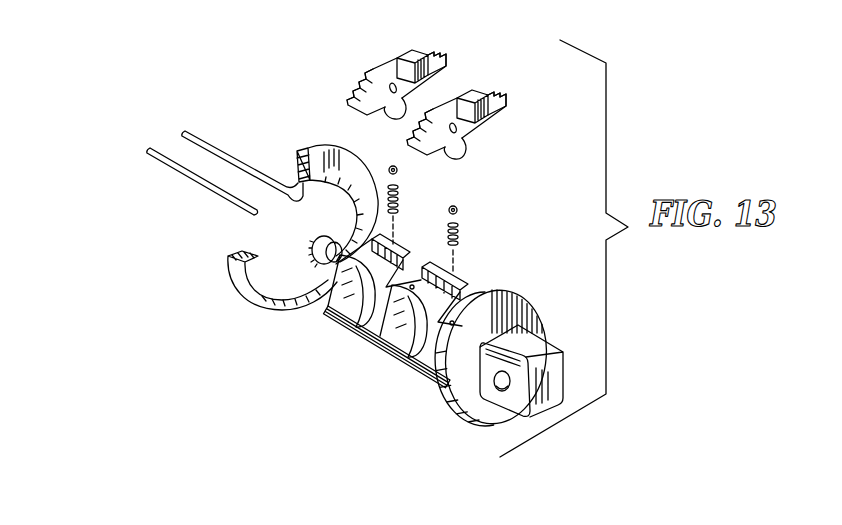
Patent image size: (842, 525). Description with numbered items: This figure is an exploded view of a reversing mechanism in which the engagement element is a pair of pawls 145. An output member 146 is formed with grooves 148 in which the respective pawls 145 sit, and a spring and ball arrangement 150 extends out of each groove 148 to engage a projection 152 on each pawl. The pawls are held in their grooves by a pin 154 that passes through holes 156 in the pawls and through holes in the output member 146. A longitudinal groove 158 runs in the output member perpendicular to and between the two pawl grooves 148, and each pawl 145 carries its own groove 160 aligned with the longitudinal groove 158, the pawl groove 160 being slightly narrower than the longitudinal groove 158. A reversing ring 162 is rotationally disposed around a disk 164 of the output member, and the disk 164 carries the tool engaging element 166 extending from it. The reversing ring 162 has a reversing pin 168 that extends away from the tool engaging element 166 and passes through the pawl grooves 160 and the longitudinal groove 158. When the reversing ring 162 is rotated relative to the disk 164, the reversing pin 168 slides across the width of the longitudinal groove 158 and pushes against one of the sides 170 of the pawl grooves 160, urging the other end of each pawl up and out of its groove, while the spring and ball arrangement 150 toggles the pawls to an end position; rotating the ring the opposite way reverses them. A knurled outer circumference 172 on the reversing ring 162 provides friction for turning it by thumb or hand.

The pawl 145 is at (440, 95).
The output member 146 is at (505, 290).
The groove 148 is at (410, 260).
The spring and ball arrangement 150 is at (406, 183).
The projection 152 is at (388, 112).
The pin 154 is at (217, 200).
The hole 156 is at (391, 86).
The longitudinal groove 158 is at (420, 292).
The pawl groove 160 is at (385, 55).
The reversing ring 162 is at (246, 336).
The disk 164 is at (462, 414).
The tool engaging element 166 is at (557, 367).
The reversing pin 168 is at (240, 163).
The side of the pawl groove 170 is at (393, 70).
The knurled outer circumference 172 is at (230, 290).